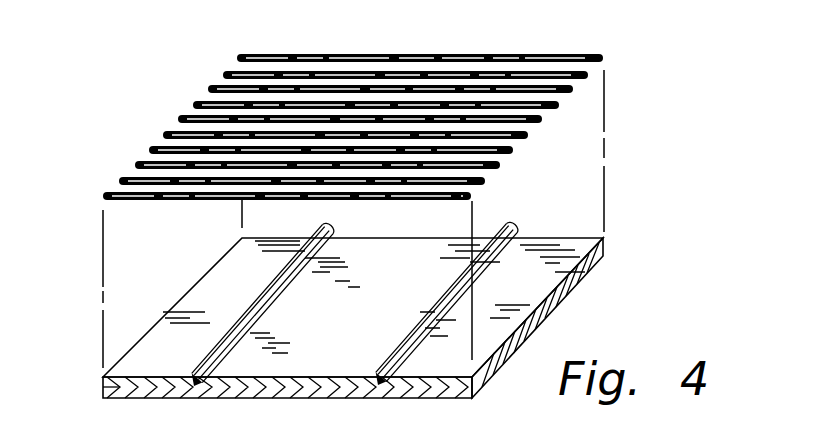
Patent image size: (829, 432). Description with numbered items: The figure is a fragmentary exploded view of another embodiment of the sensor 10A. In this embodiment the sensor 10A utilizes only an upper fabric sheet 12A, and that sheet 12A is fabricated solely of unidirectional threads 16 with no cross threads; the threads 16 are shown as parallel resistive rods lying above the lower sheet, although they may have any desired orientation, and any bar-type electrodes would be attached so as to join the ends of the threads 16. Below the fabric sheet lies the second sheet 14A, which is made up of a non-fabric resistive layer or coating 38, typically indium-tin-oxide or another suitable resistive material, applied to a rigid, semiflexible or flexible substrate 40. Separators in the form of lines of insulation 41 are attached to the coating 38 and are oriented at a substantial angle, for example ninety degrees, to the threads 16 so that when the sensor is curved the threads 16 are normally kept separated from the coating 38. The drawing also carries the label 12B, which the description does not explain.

The first array of conductor rods 10A is at (315, 102).
The conductor rod of first array 12A is at (207, 85).
The conductor rod of second array 12B is at (464, 326).
The base plate 14A is at (327, 331).
The rod end 16 is at (566, 56).
The top surface of plate 38 is at (386, 311).
The bottom layer of plate 40 is at (142, 397).
The spacer rail 41 is at (253, 307).